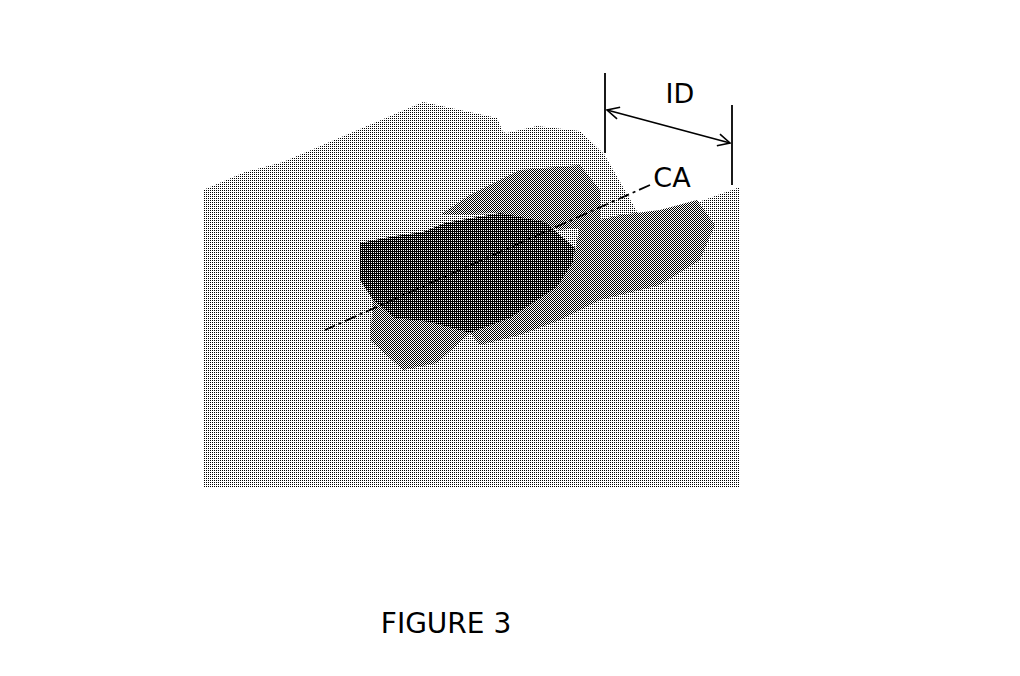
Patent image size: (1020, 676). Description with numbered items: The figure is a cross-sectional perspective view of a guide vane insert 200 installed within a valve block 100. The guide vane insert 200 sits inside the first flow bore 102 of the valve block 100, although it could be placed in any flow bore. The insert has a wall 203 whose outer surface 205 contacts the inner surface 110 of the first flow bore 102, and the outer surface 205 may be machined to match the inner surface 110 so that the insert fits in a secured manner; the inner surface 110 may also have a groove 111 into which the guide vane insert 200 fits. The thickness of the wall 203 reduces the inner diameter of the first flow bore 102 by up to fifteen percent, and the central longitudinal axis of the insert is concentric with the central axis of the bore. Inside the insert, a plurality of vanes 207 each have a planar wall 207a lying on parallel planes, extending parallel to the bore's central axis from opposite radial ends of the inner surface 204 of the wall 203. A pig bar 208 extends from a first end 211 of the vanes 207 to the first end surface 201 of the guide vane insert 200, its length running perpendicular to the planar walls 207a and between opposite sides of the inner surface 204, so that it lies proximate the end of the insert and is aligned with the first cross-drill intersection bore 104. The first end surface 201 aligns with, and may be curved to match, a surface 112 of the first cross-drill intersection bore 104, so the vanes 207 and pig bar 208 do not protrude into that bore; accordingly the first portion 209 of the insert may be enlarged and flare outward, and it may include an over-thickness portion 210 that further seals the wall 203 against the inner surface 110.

The valve block 100 is at (400, 88).
The first flow bore 102 is at (600, 213).
The first cross-drill intersection bore 104 is at (327, 402).
The inner surface 110 is at (490, 212).
The groove 111 is at (535, 330).
The surface 112 is at (400, 397).
The guide vane insert 200 is at (508, 343).
The first end surface 201 is at (443, 368).
The wall 203 is at (362, 252).
The inner surface 204 is at (473, 328).
The outer surface 205 is at (568, 262).
The vanes 207 is at (437, 250).
The planar wall 207a is at (513, 263).
The pig bar 208 is at (423, 287).
The first portion 209 is at (373, 297).
The over-thickness portion 210 is at (395, 369).
The first end 211 is at (455, 313).